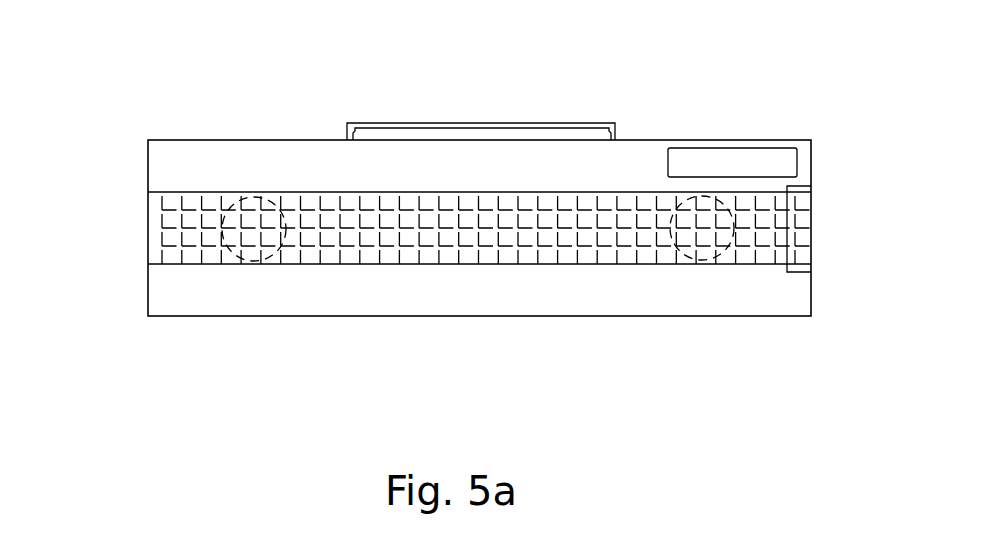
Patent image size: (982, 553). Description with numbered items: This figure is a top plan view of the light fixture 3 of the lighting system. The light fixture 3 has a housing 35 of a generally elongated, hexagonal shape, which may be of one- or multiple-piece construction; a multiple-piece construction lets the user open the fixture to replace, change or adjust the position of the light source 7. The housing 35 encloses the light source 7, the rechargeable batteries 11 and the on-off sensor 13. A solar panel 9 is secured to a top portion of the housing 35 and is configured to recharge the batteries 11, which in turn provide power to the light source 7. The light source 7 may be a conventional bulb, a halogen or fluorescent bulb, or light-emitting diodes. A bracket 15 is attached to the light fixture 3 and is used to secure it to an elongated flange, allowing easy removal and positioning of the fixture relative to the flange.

The light fixture 3 is at (125, 211).
The light source 7 is at (230, 245).
The solar panel 9 is at (585, 217).
The rechargeable batteries 11 is at (753, 148).
The on-off sensor 13 is at (811, 227).
The bracket 15 is at (550, 120).
The housing 35 is at (235, 177).